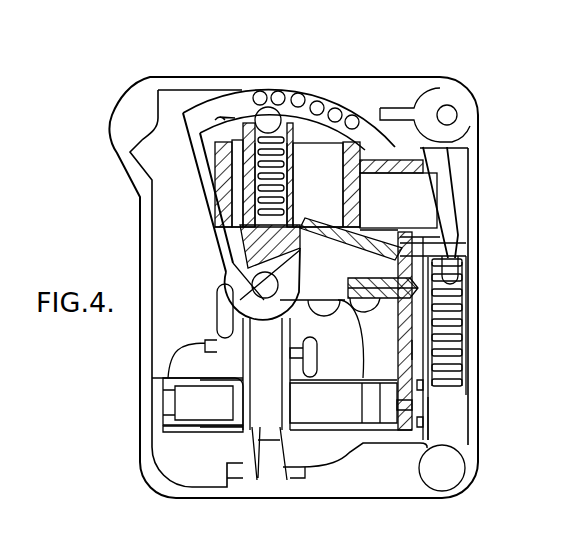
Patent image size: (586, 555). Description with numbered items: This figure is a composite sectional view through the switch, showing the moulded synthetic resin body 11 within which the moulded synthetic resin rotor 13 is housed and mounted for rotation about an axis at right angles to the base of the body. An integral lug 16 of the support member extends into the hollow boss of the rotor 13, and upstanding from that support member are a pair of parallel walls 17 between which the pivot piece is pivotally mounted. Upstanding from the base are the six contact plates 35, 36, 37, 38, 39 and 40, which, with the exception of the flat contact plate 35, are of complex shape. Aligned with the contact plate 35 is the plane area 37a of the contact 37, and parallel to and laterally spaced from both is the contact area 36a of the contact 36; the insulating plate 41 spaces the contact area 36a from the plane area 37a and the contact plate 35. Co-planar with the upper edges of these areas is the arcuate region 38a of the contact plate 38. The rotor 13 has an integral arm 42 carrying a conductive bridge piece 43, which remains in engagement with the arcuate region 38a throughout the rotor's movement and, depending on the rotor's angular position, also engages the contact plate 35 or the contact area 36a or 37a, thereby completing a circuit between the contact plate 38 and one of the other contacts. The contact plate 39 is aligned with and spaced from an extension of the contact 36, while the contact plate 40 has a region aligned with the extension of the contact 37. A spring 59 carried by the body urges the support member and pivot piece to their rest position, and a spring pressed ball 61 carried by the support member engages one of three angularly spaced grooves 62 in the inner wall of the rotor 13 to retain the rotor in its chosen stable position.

The body 11 is at (486, 309).
The rotor 13 is at (197, 152).
The lug 16 is at (317, 184).
The parallel walls 17 is at (225, 207).
The contact plate 35 is at (404, 239).
The contact plate 36 is at (430, 433).
The contact area 36a is at (414, 345).
The contact plate 37 is at (383, 388).
The plane area 37a is at (421, 368).
The contact plate 38 is at (290, 373).
The arcuate region 38a is at (322, 335).
The contact plate 39 is at (193, 424).
The contact plate 40 is at (210, 380).
The insulating plate 41 is at (432, 395).
The arm 42 is at (460, 258).
The bridge piece 43 is at (460, 278).
The spring 59 is at (466, 322).
The spring pressed ball 61 is at (270, 118).
The grooves 62 is at (223, 113).